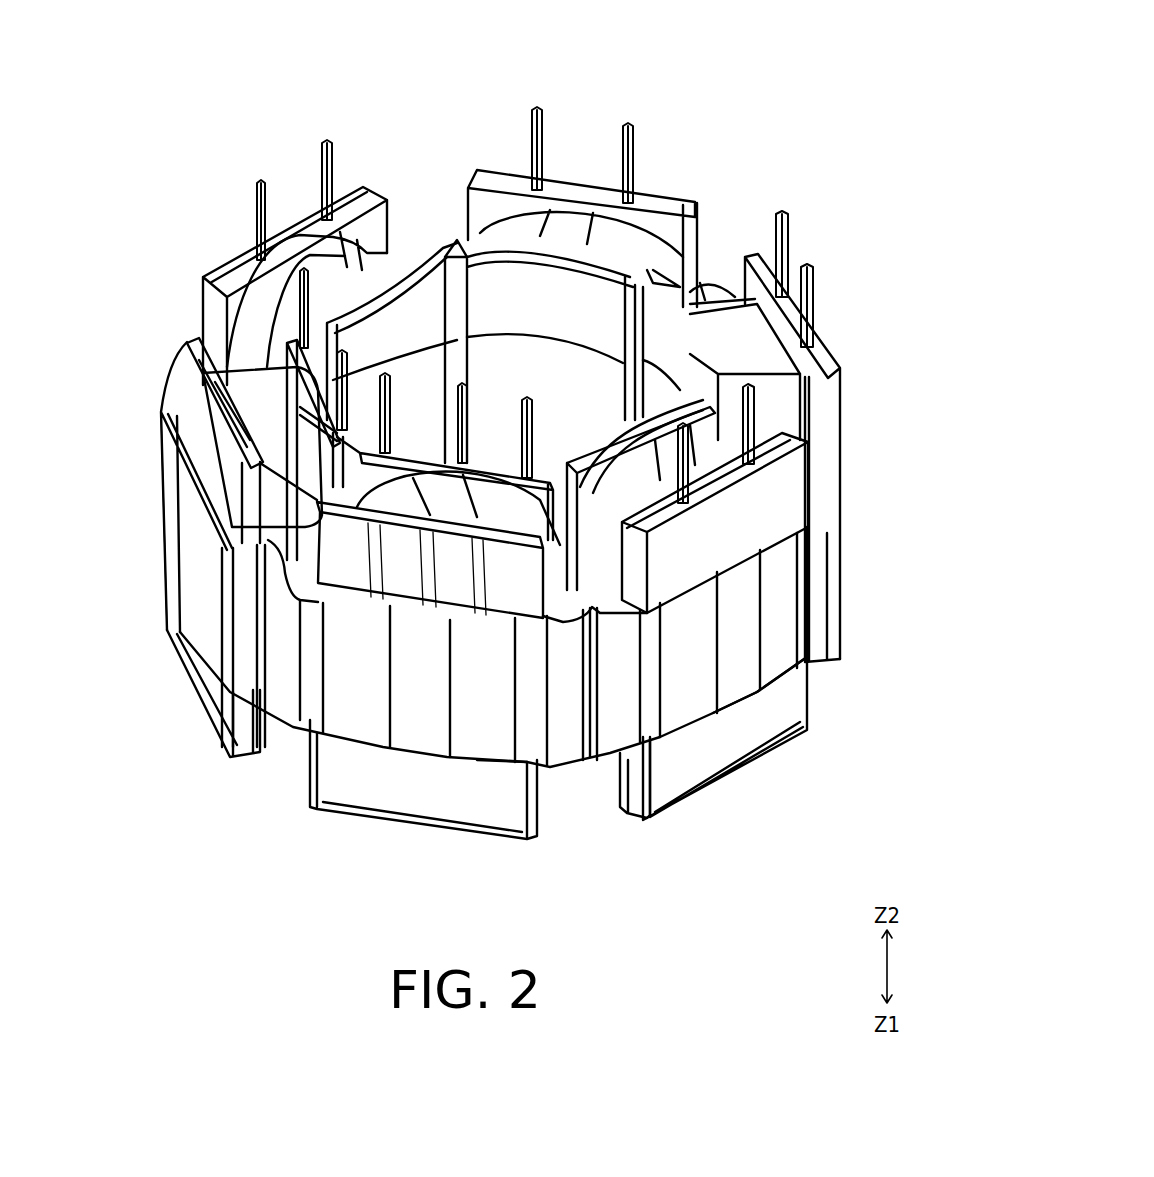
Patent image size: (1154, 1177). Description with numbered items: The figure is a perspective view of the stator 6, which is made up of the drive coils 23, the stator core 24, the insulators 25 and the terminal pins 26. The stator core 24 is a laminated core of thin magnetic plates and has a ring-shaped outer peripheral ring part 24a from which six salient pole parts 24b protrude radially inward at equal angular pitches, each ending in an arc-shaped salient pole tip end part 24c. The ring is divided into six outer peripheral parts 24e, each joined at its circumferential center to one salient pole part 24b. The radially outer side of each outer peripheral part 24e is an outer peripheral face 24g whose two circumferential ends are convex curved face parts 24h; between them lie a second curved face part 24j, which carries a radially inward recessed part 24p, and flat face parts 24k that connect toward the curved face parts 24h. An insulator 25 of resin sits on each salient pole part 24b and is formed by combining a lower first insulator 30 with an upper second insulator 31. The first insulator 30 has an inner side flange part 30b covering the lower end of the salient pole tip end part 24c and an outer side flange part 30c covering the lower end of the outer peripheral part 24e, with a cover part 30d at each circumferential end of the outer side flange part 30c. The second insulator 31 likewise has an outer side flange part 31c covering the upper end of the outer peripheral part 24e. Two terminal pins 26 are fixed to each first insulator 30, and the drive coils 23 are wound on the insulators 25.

The stator 6 is at (835, 57).
The drive coil 23 is at (503, 217).
The stator core 24 is at (496, 572).
The outer peripheral ring part 24a is at (161, 513).
The salient pole part 24b is at (507, 336).
The salient pole tip end part 24c is at (390, 363).
The outer peripheral part 24e is at (175, 568).
The outer peripheral face 24g is at (600, 760).
The curved face part 24h is at (263, 702).
The second curved face part 24j is at (341, 700).
The flat face part 24k is at (224, 685).
The recessed part 24p is at (202, 630).
The insulator 25 is at (545, 509).
The terminal pin 26 is at (327, 140).
The first insulator 30 is at (507, 440).
The inner side flange part 30b is at (290, 322).
The outer side flange part 30c is at (237, 253).
The cover part 30d is at (703, 280).
The second insulator 31 is at (545, 509).
The outer side flange part 31c is at (210, 727).